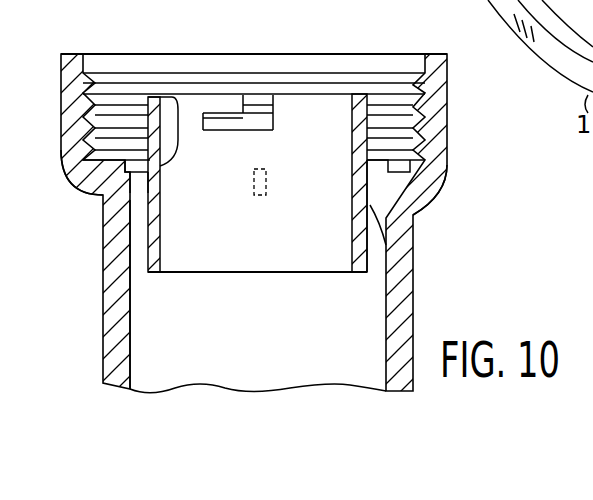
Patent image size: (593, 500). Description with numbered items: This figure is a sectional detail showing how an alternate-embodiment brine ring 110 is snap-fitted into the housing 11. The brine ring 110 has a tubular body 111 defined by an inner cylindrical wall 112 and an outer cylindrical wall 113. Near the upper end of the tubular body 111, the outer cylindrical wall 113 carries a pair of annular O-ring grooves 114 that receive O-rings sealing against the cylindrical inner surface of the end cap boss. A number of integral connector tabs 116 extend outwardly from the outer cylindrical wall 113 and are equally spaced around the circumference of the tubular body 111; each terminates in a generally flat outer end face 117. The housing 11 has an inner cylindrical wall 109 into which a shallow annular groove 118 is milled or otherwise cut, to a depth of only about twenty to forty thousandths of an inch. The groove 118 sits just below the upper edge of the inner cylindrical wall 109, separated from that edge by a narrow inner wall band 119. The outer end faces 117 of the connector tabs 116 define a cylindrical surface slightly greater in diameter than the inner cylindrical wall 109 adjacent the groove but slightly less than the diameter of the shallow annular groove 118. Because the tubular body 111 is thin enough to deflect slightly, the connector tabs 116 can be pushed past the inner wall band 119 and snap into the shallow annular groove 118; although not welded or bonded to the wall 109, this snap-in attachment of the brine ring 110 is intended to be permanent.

The housing 11 is at (400, 308).
The inner cylindrical wall 109 is at (135, 344).
The brine ring 110 is at (211, 256).
The tubular body 111 is at (390, 247).
The inner cylindrical wall 112 is at (348, 222).
The outer cylindrical wall 113 is at (418, 198).
The annular O-ring grooves 114 is at (374, 126).
The connector tabs 116 is at (150, 182).
The outer end faces 117 is at (122, 178).
The shallow annular groove 118 is at (350, 175).
The inner wall band 119 is at (175, 105).